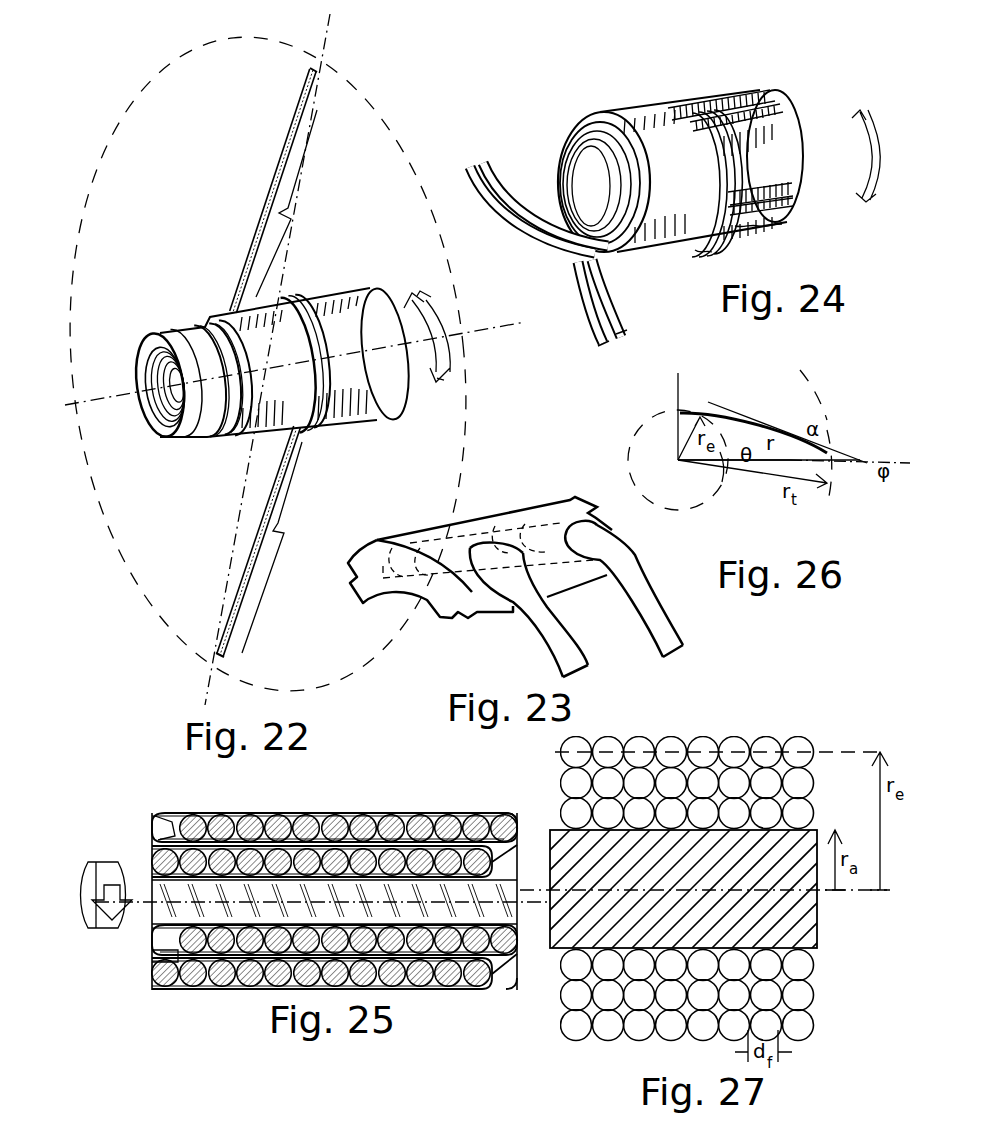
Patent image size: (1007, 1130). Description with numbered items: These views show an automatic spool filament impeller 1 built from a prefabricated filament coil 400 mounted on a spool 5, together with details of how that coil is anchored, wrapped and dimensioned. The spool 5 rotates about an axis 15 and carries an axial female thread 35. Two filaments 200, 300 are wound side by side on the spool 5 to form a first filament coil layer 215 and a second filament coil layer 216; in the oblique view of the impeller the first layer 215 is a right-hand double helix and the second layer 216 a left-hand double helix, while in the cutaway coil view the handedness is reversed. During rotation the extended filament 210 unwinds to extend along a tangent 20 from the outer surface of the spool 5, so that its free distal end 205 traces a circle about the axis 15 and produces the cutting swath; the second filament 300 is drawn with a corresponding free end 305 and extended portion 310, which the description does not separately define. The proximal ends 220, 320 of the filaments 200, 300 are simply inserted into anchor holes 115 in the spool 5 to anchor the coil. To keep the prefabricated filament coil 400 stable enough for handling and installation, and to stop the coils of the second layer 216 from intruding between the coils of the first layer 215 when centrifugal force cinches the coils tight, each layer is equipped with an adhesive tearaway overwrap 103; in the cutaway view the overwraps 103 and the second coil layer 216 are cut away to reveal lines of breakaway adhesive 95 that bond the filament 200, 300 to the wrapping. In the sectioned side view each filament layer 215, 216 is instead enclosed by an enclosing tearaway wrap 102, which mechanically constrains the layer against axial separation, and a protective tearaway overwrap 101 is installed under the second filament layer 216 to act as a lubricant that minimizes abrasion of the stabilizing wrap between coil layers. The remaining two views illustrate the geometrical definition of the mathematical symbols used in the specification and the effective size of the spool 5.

In FIG. 22, the automatic spool filament impeller 1 is at (151, 256).
In FIG. 22, the spool 5 is at (136, 358).
In FIG. 23, the spool 5 is at (437, 617).
In FIG. 22, the axis 15 is at (493, 323).
In FIG. 25, the axis 15 is at (524, 892).
In FIG. 27, the axis 15 is at (524, 897).
In FIG. 22, the tangent 20 is at (333, 28).
In FIG. 22, the axial female thread 35 is at (138, 380).
In FIG. 24, the breakaway adhesive 95 is at (790, 92).
In FIG. 25, the protective tearaway overwrap 101 is at (517, 985).
In FIG. 25, the enclosing tearaway wrap 102 is at (505, 813).
In FIG. 22, the adhesive tearaway overwrap 103 is at (352, 294).
In FIG. 24, the adhesive tearaway overwrap 103 is at (712, 102).
In FIG. 23, the anchor holes 115 is at (387, 553).
In FIG. 22, the filament 200 is at (272, 206).
In FIG. 24, the filament 200 is at (590, 327).
In FIG. 23, the filament 200 is at (550, 661).
In FIG. 25, the filament 200 is at (300, 822).
In FIG. 22, the distal end 205 is at (313, 66).
In FIG. 24, the distal end 205 is at (603, 343).
In FIG. 22, the extended filament 210 is at (291, 219).
In FIG. 24, the first filament coil layer 215 is at (758, 226).
In FIG. 25, the first filament coil layer 215 is at (155, 958).
In FIG. 24, the second filament coil layer 216 is at (705, 252).
In FIG. 25, the second filament coil layer 216 is at (170, 820).
In FIG. 24, the proximal end 220 is at (472, 164).
In FIG. 23, the proximal end 220 is at (450, 547).
In FIG. 22, the second filament 300 is at (256, 545).
In FIG. 24, the second filament 300 is at (616, 302).
In FIG. 23, the second filament 300 is at (647, 640).
In FIG. 25, the second filament 300 is at (352, 825).
In FIG. 22, the first end of second wire 305 is at (215, 652).
In FIG. 24, the first end of second wire 305 is at (628, 334).
In FIG. 22, the section of second wire 310 is at (284, 533).
In FIG. 24, the proximal end 320 is at (485, 160).
In FIG. 23, the proximal end 320 is at (547, 533).
In FIG. 22, the prefabricated filament coil 400 is at (388, 420).
In FIG. 24, the prefabricated filament coil 400 is at (806, 103).
In FIG. 25, the prefabricated filament coil 400 is at (127, 820).